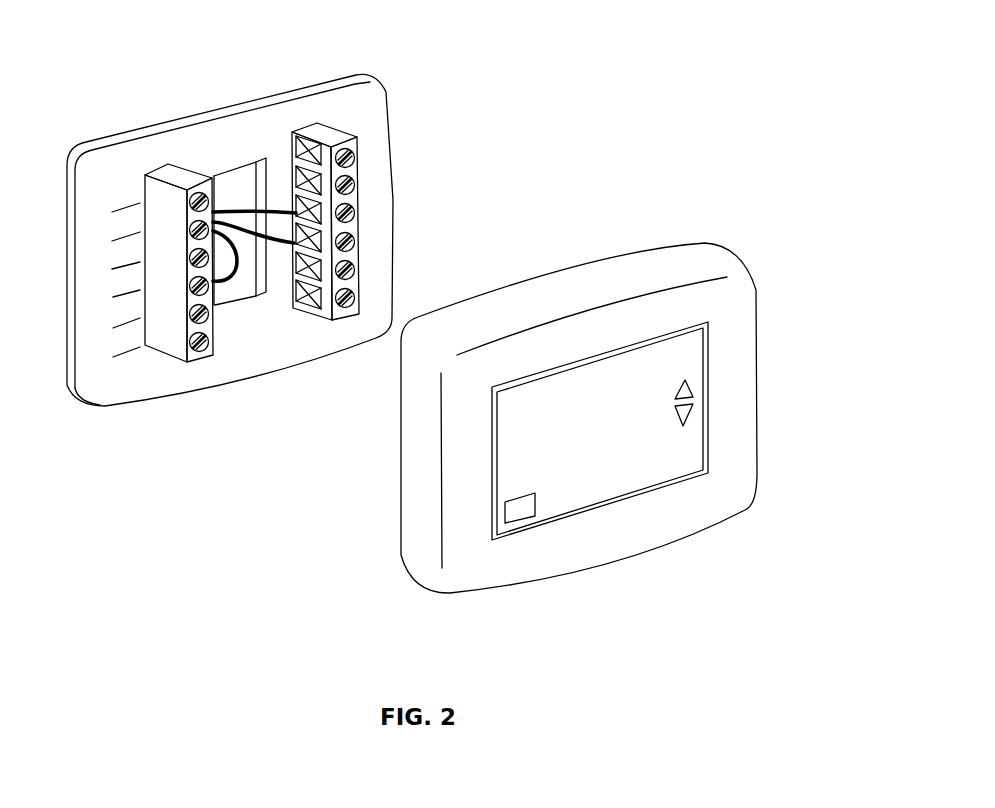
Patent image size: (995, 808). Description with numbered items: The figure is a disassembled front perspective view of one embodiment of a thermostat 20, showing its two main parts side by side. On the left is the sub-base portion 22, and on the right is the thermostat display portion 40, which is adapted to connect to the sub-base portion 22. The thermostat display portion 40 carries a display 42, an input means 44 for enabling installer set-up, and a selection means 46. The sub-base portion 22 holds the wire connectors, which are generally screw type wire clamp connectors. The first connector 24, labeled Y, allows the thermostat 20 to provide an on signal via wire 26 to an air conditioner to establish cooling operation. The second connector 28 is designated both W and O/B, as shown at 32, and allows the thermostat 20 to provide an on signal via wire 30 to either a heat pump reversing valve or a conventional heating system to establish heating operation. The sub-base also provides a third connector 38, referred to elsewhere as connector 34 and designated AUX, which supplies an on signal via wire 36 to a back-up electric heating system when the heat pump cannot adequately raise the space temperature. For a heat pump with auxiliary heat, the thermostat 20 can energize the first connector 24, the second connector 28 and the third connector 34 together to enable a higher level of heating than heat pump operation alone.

The thermostat 20 is at (582, 88).
The sub-base portion 22 is at (386, 88).
The first connector 24 is at (284, 258).
The wire 26 is at (259, 298).
The second connector 28 is at (296, 214).
The wire 30 is at (241, 213).
The O/B designation 32 is at (383, 190).
The third connector 34 is at (228, 278).
The wire 36 is at (210, 288).
The third connector 38 is at (78, 302).
The thermostat display portion 40 is at (727, 255).
The display 42 is at (695, 375).
The input means 44 is at (517, 522).
The selection means 46 is at (692, 393).